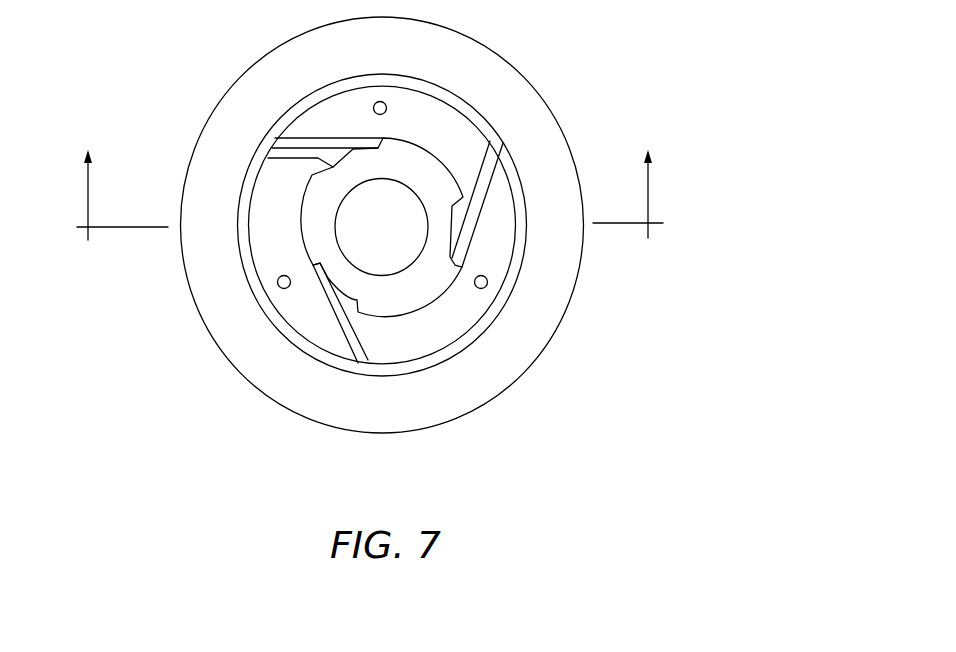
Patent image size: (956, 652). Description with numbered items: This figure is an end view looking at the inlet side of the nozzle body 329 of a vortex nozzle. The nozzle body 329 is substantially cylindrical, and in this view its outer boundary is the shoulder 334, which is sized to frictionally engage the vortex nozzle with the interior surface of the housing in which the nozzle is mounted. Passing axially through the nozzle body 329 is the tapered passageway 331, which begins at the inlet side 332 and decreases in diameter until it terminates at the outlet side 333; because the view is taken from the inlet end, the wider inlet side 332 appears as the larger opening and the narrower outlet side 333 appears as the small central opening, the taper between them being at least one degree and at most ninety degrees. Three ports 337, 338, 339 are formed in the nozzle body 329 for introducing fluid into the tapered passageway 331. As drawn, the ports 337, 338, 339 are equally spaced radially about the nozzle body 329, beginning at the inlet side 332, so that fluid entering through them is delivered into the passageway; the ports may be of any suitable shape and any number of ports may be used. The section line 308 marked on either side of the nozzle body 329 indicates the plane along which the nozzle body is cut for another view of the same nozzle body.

The section line 308 is at (370, 178).
The nozzle body 329 is at (523, 50).
The tapered passageway 331 is at (307, 317).
The inlet side 332 is at (295, 217).
The outlet side 333 is at (400, 236).
The shoulder 334 is at (553, 325).
The port 337 is at (362, 352).
The port 338 is at (462, 205).
The port 339 is at (280, 141).